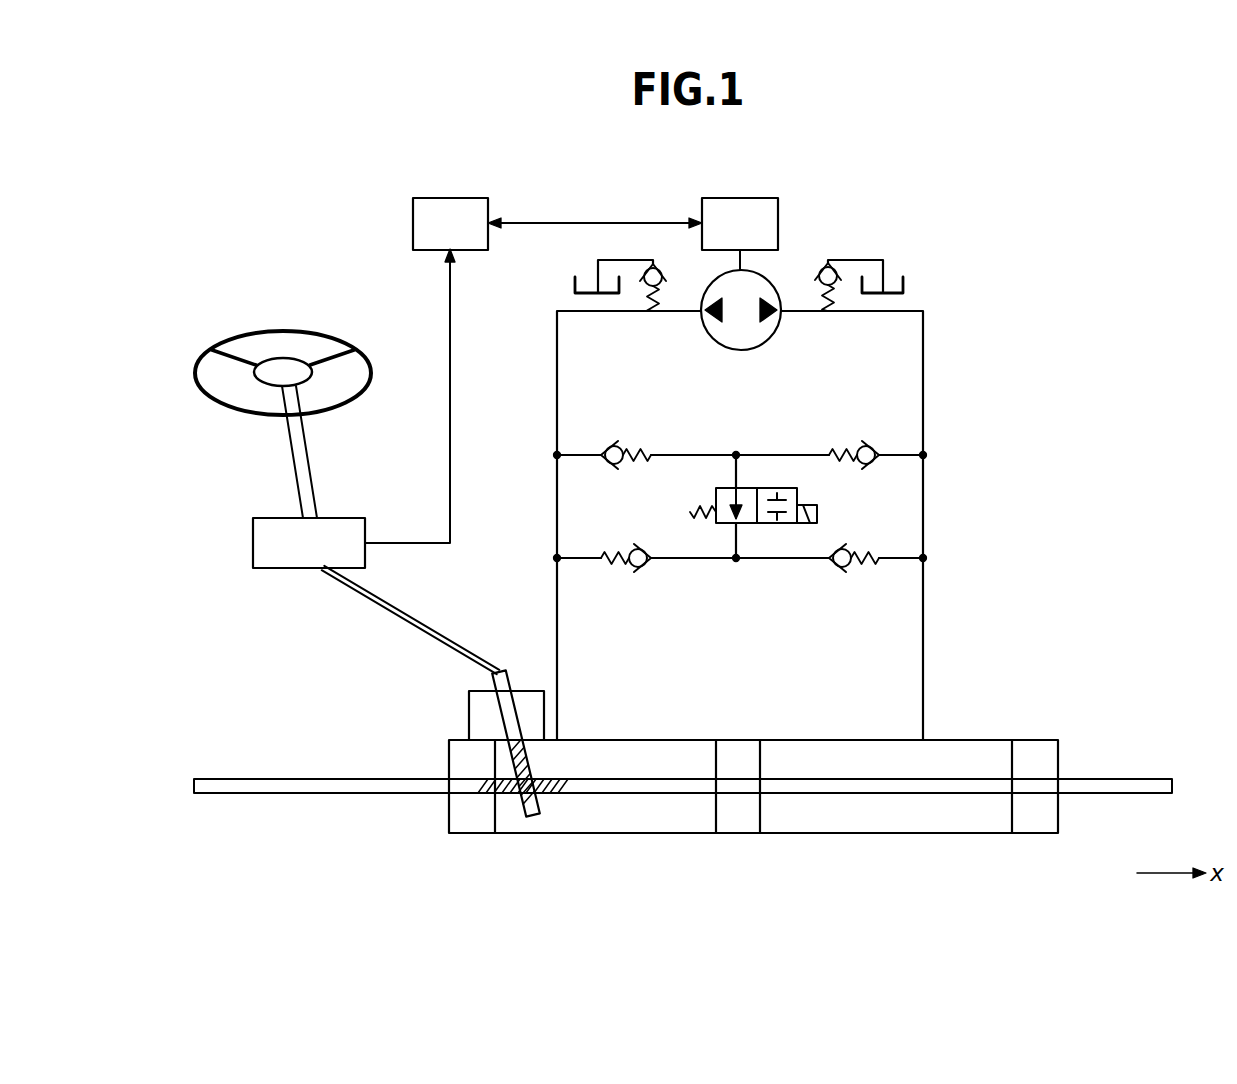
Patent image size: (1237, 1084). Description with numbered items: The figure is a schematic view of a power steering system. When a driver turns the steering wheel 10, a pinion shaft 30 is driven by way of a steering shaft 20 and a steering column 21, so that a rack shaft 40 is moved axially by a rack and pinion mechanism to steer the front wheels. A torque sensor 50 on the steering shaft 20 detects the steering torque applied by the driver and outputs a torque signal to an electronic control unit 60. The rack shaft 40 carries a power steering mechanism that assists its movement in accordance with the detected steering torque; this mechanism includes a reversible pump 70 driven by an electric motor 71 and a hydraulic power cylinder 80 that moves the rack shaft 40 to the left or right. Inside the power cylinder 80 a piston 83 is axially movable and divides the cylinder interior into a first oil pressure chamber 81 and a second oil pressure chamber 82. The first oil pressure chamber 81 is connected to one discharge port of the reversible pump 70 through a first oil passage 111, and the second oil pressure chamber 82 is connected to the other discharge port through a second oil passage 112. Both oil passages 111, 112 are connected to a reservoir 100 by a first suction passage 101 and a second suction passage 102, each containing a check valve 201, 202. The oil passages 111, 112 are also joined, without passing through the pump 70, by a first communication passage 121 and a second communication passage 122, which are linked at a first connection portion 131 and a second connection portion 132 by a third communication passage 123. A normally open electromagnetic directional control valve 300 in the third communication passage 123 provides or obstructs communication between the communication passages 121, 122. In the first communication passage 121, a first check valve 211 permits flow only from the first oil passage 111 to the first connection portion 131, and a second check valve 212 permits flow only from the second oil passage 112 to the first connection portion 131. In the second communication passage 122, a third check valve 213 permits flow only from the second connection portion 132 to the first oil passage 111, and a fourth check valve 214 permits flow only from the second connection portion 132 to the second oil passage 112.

The steering wheel 10 is at (211, 349).
The steering shaft 20 is at (292, 452).
The steering column 21 is at (408, 620).
The pinion shaft 30 is at (505, 672).
The rack shaft 40 is at (292, 795).
The torque sensor 50 is at (253, 540).
The electronic control unit 60 is at (450, 198).
The reversible pump 70 is at (769, 282).
The electric motor 71 is at (740, 198).
The hydraulic power cylinder 80 is at (471, 834).
The first oil pressure chamber 81 is at (655, 803).
The second oil pressure chamber 82 is at (890, 803).
The piston 83 is at (738, 803).
The reservoir 100 is at (573, 292).
The first suction passage 101 is at (604, 257).
The second suction passage 102 is at (882, 258).
The first oil passage 111 is at (557, 380).
The second oil passage 112 is at (923, 373).
The first communication passage 121 is at (680, 452).
The second communication passage 122 is at (696, 562).
The third communication passage 123 is at (734, 540).
The first connection portion 131 is at (738, 452).
The second connection portion 132 is at (740, 562).
The check valve 201 is at (662, 262).
The check valve 202 is at (826, 263).
The first check valve 211 is at (614, 444).
The second check valve 212 is at (870, 445).
The third check valve 213 is at (636, 568).
The fourth check valve 214 is at (853, 568).
The electromagnetic directional control valve 300 is at (818, 514).